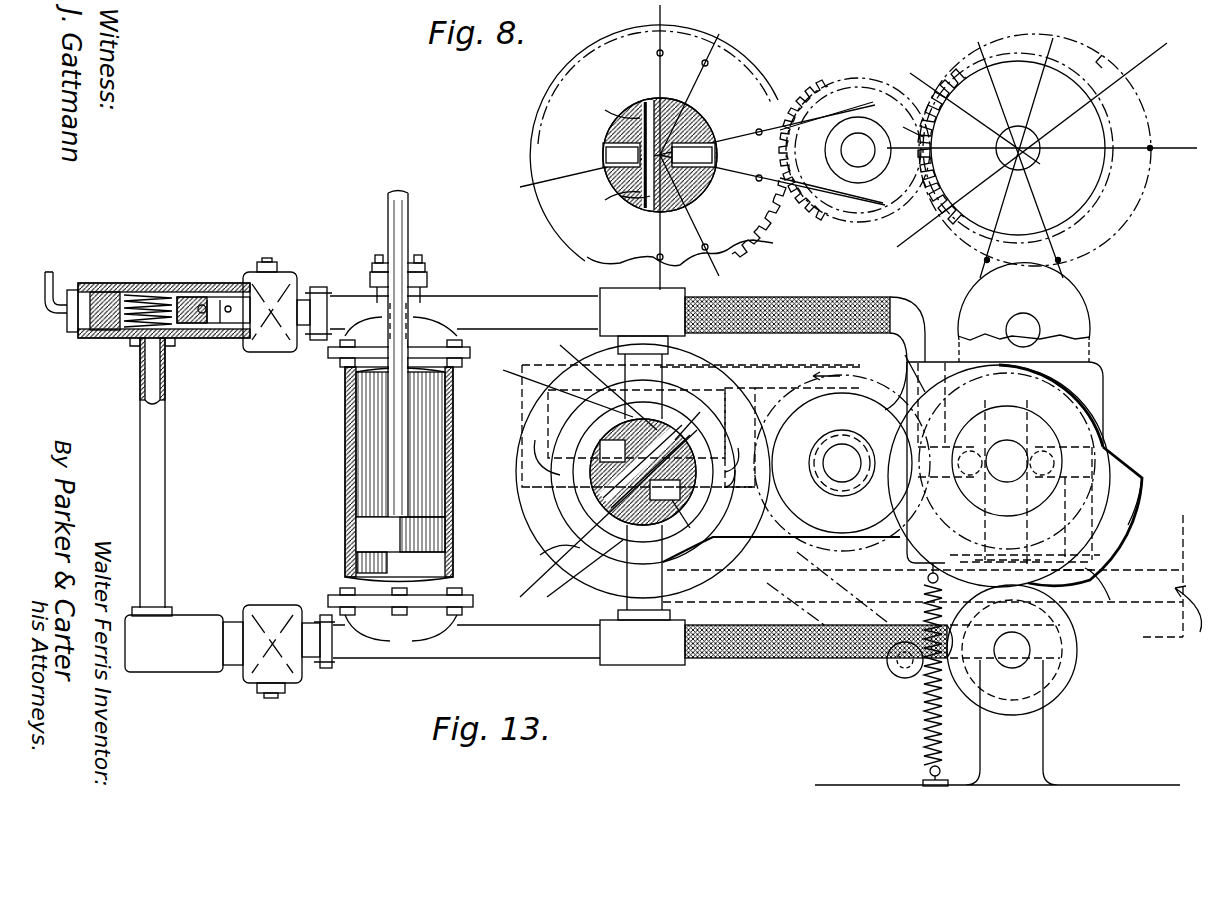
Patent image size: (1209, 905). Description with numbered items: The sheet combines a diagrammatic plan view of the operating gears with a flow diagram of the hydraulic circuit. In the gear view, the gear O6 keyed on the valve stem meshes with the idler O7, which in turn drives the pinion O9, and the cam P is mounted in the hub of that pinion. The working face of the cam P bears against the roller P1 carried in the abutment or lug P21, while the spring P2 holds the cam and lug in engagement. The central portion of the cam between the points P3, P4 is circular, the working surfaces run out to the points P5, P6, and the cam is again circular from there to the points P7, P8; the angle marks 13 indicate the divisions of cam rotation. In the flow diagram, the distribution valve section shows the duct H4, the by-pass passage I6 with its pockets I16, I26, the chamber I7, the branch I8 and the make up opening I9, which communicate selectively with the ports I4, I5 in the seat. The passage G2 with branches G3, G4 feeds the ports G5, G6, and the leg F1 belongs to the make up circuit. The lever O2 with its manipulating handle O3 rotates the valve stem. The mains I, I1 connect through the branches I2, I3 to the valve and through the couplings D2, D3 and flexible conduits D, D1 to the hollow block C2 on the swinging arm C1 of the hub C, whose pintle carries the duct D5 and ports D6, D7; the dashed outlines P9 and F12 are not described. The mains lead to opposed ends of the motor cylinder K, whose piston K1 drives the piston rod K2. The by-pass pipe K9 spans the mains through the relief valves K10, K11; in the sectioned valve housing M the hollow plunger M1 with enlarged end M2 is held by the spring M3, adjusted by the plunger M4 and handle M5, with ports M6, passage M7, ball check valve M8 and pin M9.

In FIG. 8, the duct H4 is at (687, 147).
In FIG. 13, the duct H4 is at (558, 380).
In FIG. 8, the angularly extended pocket I26 is at (640, 120).
In FIG. 8, the chamber I7 is at (688, 130).
In FIG. 8, the branch I8 is at (712, 142).
In FIG. 13, the branch I8 is at (686, 523).
In FIG. 8, the by-pass passage I6 is at (620, 196).
In FIG. 13, the by-pass passage I6 is at (596, 521).
In FIG. 8, the angularly extended pocket I16 is at (632, 202).
In FIG. 8, the idler O7 is at (835, 218).
In FIG. 8, the angle of rotation 13 is at (808, 150).
In FIG. 8, the cam point P6 is at (770, 240).
In FIG. 13, the cam point P6 is at (1092, 568).
In FIG. 8, the pinion O9 is at (945, 200).
In FIG. 13, the pinion O9 is at (1090, 420).
In FIG. 8, the cam point P7 is at (958, 104).
In FIG. 13, the cam point P7 is at (1052, 372).
In FIG. 8, the cam P is at (1035, 150).
In FIG. 8, the cam point P8 is at (1125, 70).
In FIG. 13, the cam point P8 is at (1145, 498).
In FIG. 8, the cam point P5 is at (898, 119).
In FIG. 13, the cam point P5 is at (920, 361).
In FIG. 8, the cam point P3 is at (987, 260).
In FIG. 8, the cam point P4 is at (1058, 260).
In FIG. 13, the valve housing M is at (127, 345).
In FIG. 13, the handle M5 is at (50, 272).
In FIG. 13, the plunger M4 is at (105, 292).
In FIG. 13, the spring M3 is at (150, 295).
In FIG. 13, the hollow plunger M1 is at (236, 340).
In FIG. 13, the passage M7 is at (185, 300).
In FIG. 13, the ball check valve M8 is at (203, 302).
In FIG. 13, the ports M6 is at (228, 305).
In FIG. 13, the pin M9 is at (207, 340).
In FIG. 13, the enlarged end M2 is at (220, 352).
In FIG. 13, the pressure relief valve K11 is at (277, 282).
In FIG. 13, the distribution main I1 is at (455, 305).
In FIG. 13, the motor cylinder K is at (342, 468).
In FIG. 13, the piston rod K2 is at (405, 415).
In FIG. 13, the piston K1 is at (440, 535).
In FIG. 13, the by-pass pipe K9 is at (165, 495).
In FIG. 13, the pressure relief valve K10 is at (272, 612).
In FIG. 13, the distribution main I is at (560, 652).
In FIG. 13, the fixed coupling D3 is at (600, 297).
In FIG. 13, the fixed coupling D2 is at (648, 665).
In FIG. 13, the flexible conduit D1 is at (832, 297).
In FIG. 13, the flexible conduit D is at (720, 660).
In FIG. 13, the branch I3 is at (665, 362).
In FIG. 13, the branch I2 is at (627, 597).
In FIG. 13, the hub C is at (560, 440).
In FIG. 13, the port I5 is at (596, 380).
In FIG. 13, the make up opening I9 is at (694, 419).
In FIG. 13, the port I4 is at (579, 576).
In FIG. 13, the branch G4 is at (548, 400).
In FIG. 13, the port G6 is at (560, 468).
In FIG. 13, the branch G3 is at (740, 437).
In FIG. 13, the port G5 is at (712, 478).
In FIG. 13, the gear O6 is at (536, 500).
In FIG. 13, the passage G2 is at (780, 382).
In FIG. 13, the lever O2 is at (862, 395).
In FIG. 13, the swinging arm C1 is at (827, 584).
In FIG. 13, the leg F1 is at (933, 593).
In FIG. 13, the manipulating handle O3 is at (890, 672).
In FIG. 13, the hollow block C2 is at (1085, 382).
In FIG. 13, the port D6 is at (975, 438).
In FIG. 13, the port D7 is at (1038, 428).
In FIG. 13, the cam surface P9 is at (1118, 480).
In FIG. 13, the duct D5 is at (1128, 535).
In FIG. 13, the passage F12 is at (1007, 545).
In FIG. 13, the roller P1 is at (1058, 672).
In FIG. 13, the abutment or lug P21 is at (1025, 745).
In FIG. 13, the spring P2 is at (925, 735).